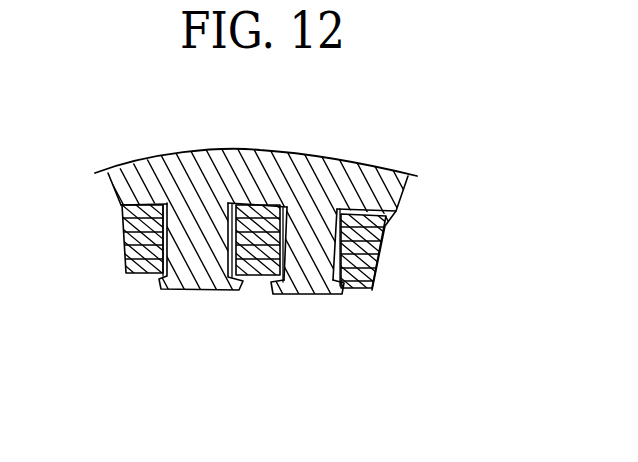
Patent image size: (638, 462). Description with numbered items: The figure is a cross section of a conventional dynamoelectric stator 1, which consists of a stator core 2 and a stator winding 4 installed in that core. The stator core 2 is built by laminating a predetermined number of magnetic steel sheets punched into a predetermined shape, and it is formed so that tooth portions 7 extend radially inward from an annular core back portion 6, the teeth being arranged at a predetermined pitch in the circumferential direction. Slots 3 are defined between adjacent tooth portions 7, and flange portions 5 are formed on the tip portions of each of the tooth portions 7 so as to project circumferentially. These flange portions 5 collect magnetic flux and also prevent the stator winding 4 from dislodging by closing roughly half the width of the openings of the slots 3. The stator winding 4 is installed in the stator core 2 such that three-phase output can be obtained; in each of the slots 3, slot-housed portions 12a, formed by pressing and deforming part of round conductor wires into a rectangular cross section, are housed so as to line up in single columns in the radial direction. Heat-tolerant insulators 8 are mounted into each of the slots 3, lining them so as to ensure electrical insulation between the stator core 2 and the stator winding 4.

The dynamoelectric stator 1 is at (84, 112).
The stator core 2 is at (286, 149).
The slots 3 is at (157, 279).
The stator winding 4 is at (125, 273).
The flange portions 5 is at (330, 297).
The core back portion 6 is at (368, 190).
The tooth portions 7 is at (291, 296).
The heat-tolerant insulators 8 is at (232, 242).
The slot-housed portions 12a is at (256, 278).